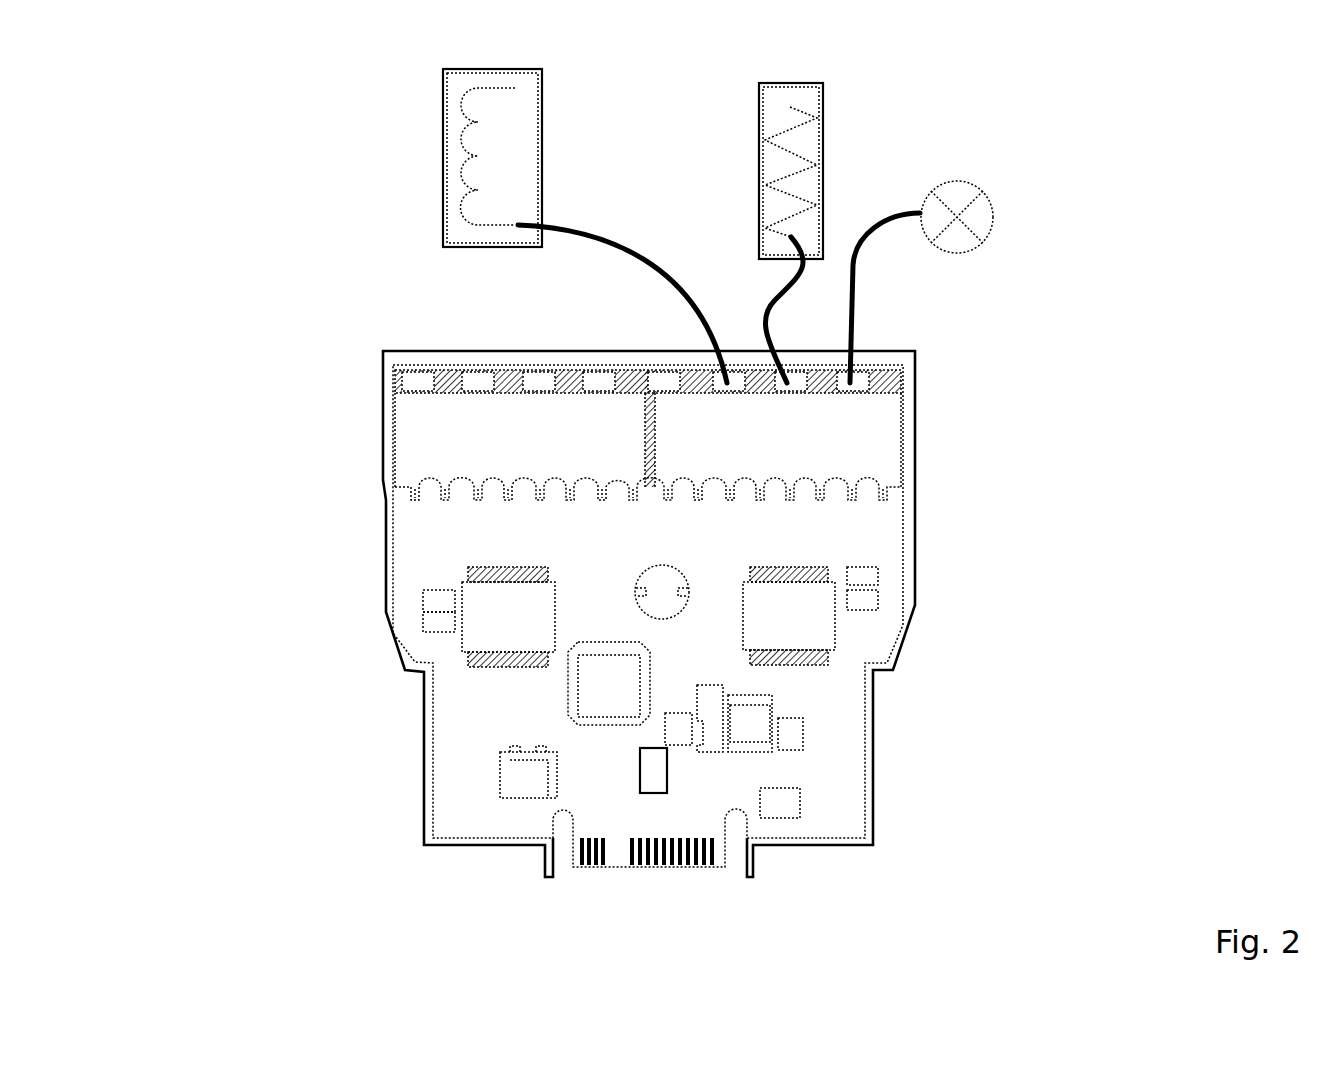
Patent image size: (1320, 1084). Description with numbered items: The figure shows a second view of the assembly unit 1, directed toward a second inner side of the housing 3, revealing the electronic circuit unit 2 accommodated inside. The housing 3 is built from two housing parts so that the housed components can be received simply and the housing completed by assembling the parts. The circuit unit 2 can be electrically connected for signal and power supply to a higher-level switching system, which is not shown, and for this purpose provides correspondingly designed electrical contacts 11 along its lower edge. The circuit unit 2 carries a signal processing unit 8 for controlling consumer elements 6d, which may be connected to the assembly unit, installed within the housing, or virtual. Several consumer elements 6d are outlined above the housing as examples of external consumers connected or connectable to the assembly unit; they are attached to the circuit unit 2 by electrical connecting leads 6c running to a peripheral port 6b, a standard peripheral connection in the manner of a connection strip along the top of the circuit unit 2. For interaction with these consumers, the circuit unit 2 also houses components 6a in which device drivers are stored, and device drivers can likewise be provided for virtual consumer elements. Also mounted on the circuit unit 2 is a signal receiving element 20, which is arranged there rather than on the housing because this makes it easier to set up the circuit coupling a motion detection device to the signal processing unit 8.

The assembly unit 1 is at (340, 330).
The electronic circuit unit 2 is at (828, 727).
The housing 3 is at (383, 497).
The components with device drivers 6a is at (787, 607).
The peripheral port 6b is at (557, 428).
The electrical connecting leads 6c is at (710, 325).
The consumer elements 6d is at (525, 133).
The signal processing unit 8 is at (620, 684).
The electrical contacts 11 is at (653, 847).
The signal receiving element 20 is at (657, 772).